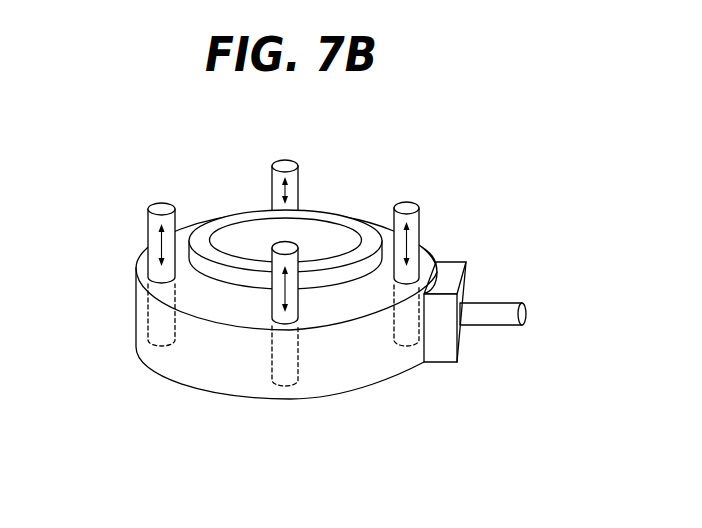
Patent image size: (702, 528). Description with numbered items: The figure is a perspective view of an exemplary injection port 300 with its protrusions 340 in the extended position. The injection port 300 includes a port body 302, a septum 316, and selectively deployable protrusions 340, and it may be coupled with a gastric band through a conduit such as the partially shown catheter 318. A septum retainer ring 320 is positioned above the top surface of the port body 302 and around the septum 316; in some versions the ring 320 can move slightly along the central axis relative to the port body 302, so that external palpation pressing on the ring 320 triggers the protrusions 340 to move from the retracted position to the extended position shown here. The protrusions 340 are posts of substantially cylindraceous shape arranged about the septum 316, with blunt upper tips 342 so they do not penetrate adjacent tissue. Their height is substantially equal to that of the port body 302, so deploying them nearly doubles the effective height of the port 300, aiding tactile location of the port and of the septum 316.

The injection port 300 is at (405, 140).
The port body 302 is at (197, 355).
The septum 316 is at (310, 237).
The catheter 318 is at (505, 302).
The septum retainer ring 320 is at (238, 218).
The protrusions 340 is at (153, 222).
The upper tips 342 is at (162, 205).